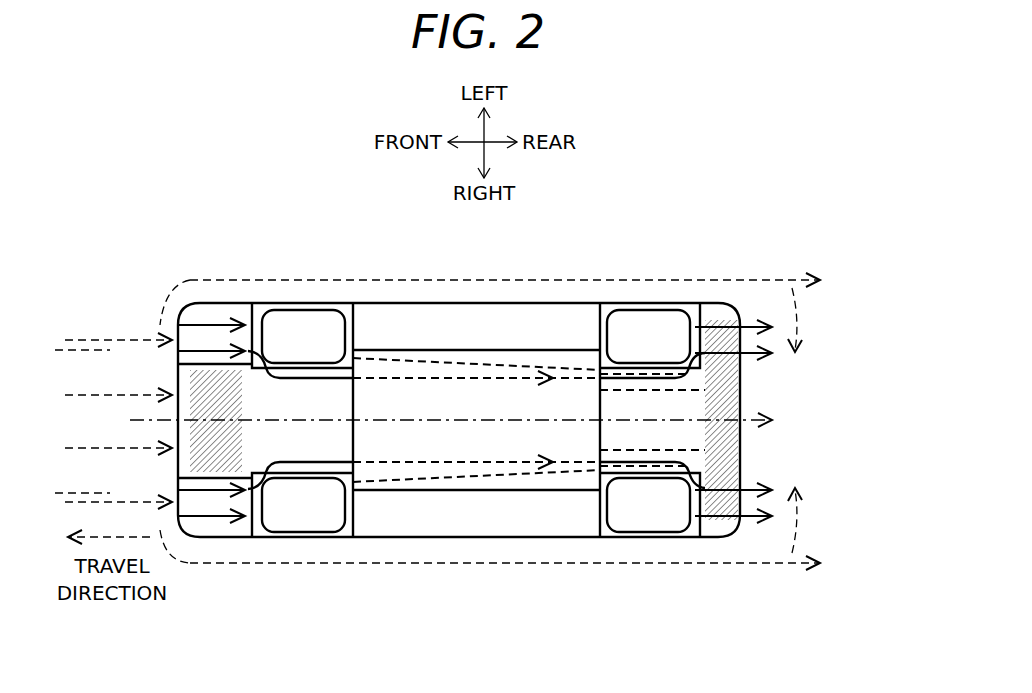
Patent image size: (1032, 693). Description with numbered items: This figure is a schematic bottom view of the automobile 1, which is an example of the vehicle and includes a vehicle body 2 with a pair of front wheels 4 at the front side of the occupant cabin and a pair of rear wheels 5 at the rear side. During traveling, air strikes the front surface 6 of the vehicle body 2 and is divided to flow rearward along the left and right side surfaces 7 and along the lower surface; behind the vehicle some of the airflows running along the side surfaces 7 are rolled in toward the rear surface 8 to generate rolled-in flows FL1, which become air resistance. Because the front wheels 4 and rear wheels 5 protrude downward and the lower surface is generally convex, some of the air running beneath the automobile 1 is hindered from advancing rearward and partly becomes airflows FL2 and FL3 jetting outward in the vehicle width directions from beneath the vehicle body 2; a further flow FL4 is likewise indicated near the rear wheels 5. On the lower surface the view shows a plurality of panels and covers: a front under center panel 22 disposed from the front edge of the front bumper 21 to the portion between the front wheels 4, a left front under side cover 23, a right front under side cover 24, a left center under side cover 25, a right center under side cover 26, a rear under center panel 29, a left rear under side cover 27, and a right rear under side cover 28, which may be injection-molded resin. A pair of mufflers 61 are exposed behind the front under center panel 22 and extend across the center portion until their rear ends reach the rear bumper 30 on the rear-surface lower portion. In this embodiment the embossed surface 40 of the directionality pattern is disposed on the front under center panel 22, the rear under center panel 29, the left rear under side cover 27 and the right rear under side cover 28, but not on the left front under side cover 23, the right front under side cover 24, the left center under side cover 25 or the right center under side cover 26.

The automobile 1 is at (587, 238).
The vehicle body 2 is at (456, 303).
The front wheels 4 is at (310, 520).
The rear wheels 5 is at (622, 525).
The front surface 6 is at (178, 350).
The side surfaces 7 is at (408, 537).
The rear surface 8 is at (745, 385).
The front bumper 21 is at (178, 465).
The front under center panel 22 is at (178, 440).
The left front under side cover 23 is at (225, 303).
The right front under side cover 24 is at (210, 537).
The left center under side cover 25 is at (388, 303).
The right center under side cover 26 is at (373, 537).
The left rear under side cover 27 is at (722, 305).
The right rear under side cover 28 is at (722, 537).
The rear under center panel 29 is at (690, 437).
The rear bumper 30 is at (745, 440).
The embossed surface 40 is at (720, 406).
The mufflers 61 is at (485, 525).
The rolled-in flows FL1 is at (805, 514).
The airflows jetting outward FL2 is at (280, 551).
The airflows jetting outward FL3 is at (582, 552).
The rear wheel house flow FL4 is at (658, 555).